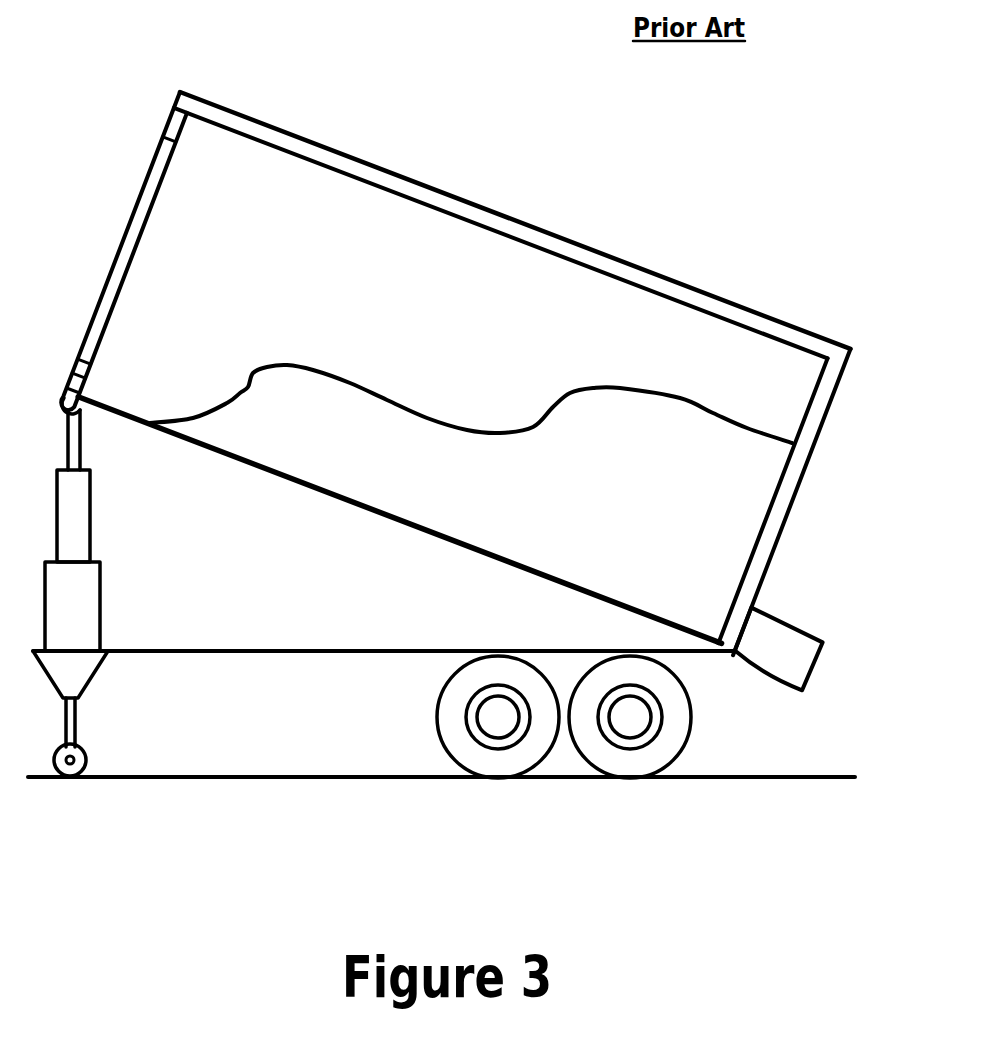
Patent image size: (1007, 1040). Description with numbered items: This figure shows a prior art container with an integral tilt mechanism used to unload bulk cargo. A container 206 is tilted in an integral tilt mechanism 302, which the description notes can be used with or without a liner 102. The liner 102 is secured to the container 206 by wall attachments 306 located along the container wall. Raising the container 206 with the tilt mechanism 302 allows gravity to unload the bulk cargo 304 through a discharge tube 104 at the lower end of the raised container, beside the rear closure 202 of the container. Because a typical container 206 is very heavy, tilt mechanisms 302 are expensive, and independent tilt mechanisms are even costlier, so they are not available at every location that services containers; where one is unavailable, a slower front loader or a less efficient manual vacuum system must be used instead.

The liner 102 is at (295, 147).
The discharge tube 104 is at (765, 630).
The tailgate 202 is at (813, 415).
The container 206 is at (438, 188).
The tilt mechanism 302 is at (73, 611).
The bulk cargo 304 is at (588, 453).
The wall attachments 306 is at (176, 118).